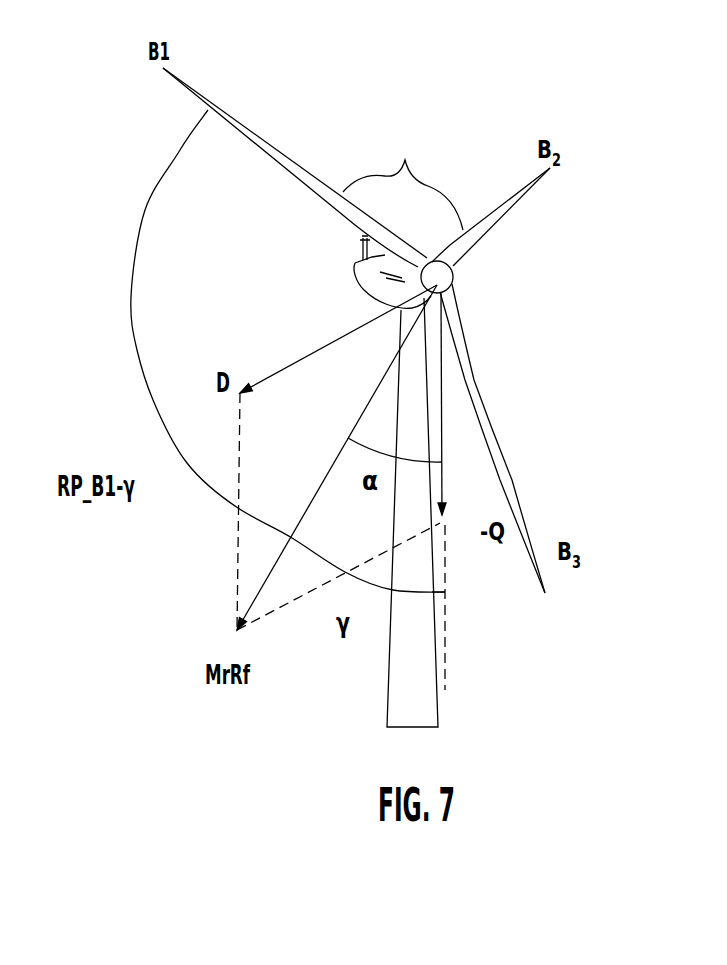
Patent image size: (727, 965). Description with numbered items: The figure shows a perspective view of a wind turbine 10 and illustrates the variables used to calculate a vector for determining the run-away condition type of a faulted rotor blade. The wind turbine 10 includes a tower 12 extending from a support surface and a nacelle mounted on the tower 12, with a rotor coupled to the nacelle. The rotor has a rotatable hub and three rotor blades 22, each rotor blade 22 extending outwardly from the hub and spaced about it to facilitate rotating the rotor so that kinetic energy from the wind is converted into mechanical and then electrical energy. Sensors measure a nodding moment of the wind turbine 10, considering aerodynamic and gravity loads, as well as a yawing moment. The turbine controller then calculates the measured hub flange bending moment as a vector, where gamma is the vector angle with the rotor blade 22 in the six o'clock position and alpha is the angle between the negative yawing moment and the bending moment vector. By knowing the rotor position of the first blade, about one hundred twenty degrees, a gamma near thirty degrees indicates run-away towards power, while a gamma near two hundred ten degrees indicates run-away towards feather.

The wind turbine 10 is at (388, 405).
The tower 12 is at (388, 703).
The rotor blade 22 is at (538, 423).